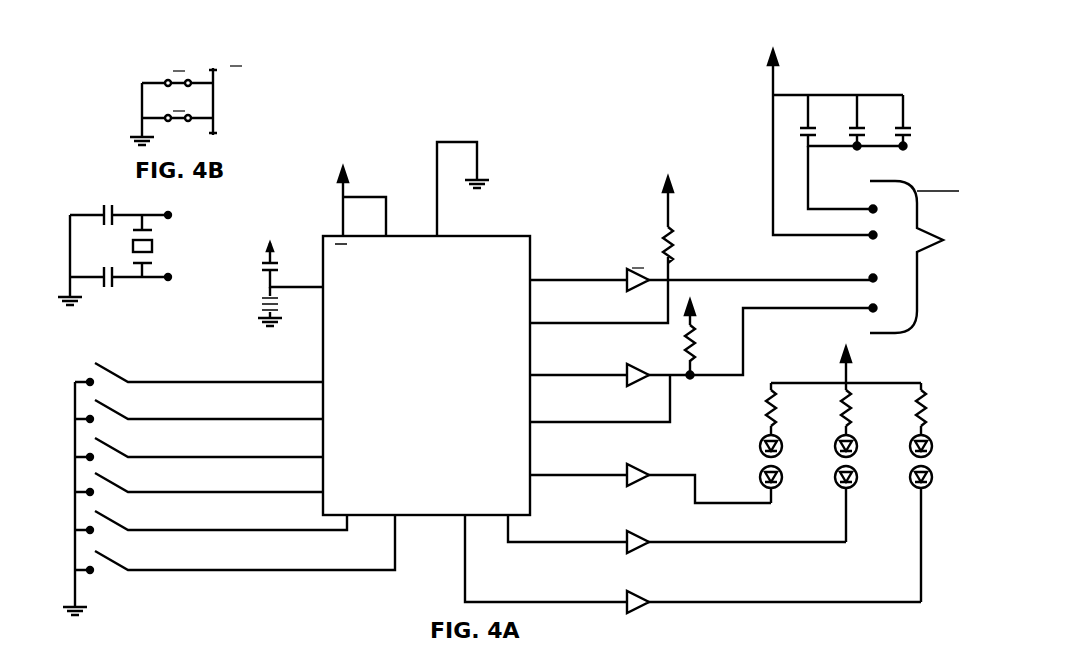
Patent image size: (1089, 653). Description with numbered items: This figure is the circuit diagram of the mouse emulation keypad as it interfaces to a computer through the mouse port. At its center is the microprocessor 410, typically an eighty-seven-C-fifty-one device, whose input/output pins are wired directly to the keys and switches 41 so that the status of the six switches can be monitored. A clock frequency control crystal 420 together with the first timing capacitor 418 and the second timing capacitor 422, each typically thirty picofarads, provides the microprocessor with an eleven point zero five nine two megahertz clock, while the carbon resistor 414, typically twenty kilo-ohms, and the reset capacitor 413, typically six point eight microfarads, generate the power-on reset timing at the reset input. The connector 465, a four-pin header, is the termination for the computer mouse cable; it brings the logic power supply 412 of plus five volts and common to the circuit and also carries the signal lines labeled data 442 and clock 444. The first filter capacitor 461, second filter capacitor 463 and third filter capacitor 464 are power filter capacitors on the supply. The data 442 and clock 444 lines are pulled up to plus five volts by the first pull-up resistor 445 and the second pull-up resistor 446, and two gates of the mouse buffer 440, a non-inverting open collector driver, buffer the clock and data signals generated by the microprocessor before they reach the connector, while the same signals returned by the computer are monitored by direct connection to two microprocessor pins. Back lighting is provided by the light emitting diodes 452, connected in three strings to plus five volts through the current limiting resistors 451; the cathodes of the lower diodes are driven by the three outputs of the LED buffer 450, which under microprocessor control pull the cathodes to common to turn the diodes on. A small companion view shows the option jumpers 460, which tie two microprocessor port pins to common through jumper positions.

In FIG. 4A, the keys and switches S1-S6 41 is at (75, 472).
In FIG. 4A, the microprocessor 410 is at (527, 236).
In FIG. 4A, the logic power supply to microprocessor 412 is at (372, 197).
In FIG. 4A, the capacitor C-2 413 is at (274, 248).
In FIG. 4A, the carbon resistor 414 is at (264, 319).
In FIG. 4A, the capacitor C-5 418 is at (110, 286).
In FIG. 4A, the clock frequency control crystal 420 is at (157, 248).
In FIG. 4A, the capacitor C-6 422 is at (108, 206).
In FIG. 4A, the mouse buffer 440 is at (626, 272).
In FIG. 4A, the data 442 is at (756, 280).
In FIG. 4A, the clock 444 is at (762, 308).
In FIG. 4A, the resistor R-5 445 is at (710, 235).
In FIG. 4A, the resistor R-5 446 is at (695, 378).
In FIG. 4A, the LED buffer 450 is at (638, 472).
In FIG. 4A, the resistors R1-R3 451 is at (932, 393).
In FIG. 4A, the light emitting diodes L1-L6 452 is at (932, 448).
In FIG. 4B, the option jumpers 460 is at (187, 34).
In FIG. 4A, the capacitor C1 461 is at (920, 130).
In FIG. 4A, the capacitor C3 463 is at (820, 115).
In FIG. 4A, the capacitor C4 464 is at (870, 115).
In FIG. 4A, the connector for power and data and clock lines 465 is at (978, 290).